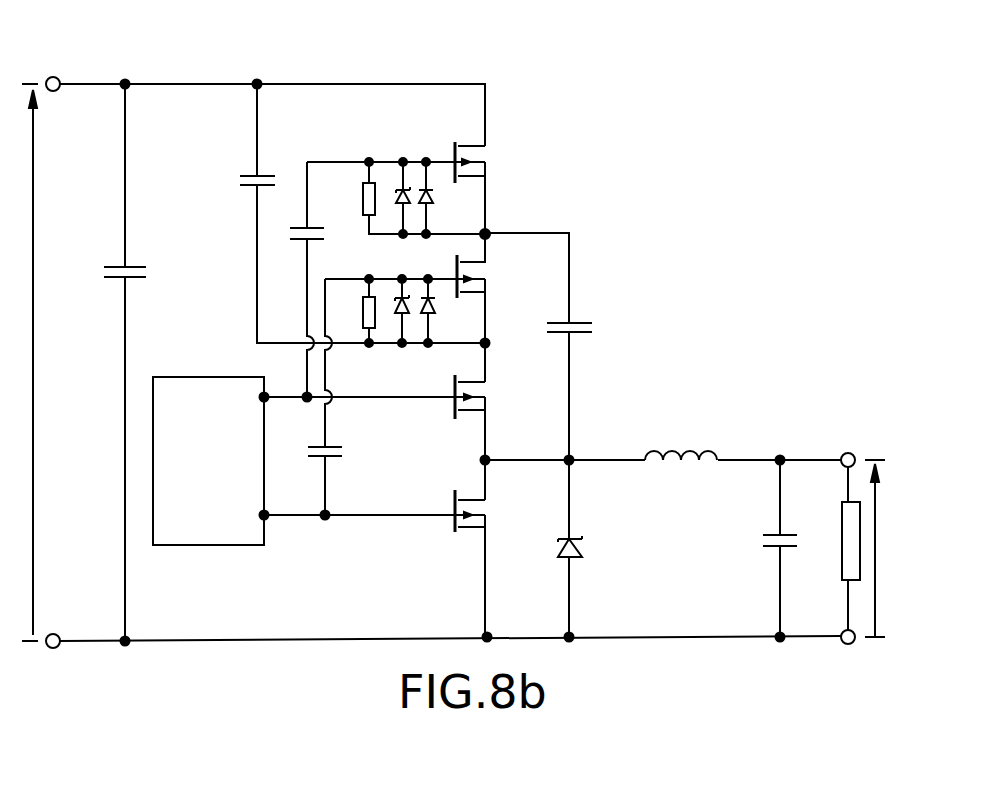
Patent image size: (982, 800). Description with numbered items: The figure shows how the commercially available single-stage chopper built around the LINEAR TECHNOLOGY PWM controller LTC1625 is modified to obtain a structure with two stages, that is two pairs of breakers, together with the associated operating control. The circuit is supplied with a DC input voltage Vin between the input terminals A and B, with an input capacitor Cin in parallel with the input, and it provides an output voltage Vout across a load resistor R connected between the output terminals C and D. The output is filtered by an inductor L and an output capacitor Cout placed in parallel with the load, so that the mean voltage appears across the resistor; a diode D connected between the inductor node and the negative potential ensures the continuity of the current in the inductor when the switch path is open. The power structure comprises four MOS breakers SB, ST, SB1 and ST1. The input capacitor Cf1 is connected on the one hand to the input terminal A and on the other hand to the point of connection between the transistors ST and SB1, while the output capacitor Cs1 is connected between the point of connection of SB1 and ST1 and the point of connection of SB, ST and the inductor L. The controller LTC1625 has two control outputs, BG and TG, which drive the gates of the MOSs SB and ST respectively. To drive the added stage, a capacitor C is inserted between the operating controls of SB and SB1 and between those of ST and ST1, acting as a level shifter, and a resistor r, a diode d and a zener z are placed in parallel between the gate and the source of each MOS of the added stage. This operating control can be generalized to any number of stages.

The input terminal A is at (54, 82).
The input terminal B is at (58, 649).
The capacitor C is at (332, 229).
The diode D is at (559, 556).
The DC input voltage Vin is at (47, 362).
The output voltage Vout is at (891, 548).
The input capacitor Cin is at (120, 279).
The input capacitor Cf1 is at (245, 188).
The output capacitor Cs1 is at (590, 321).
The output capacitor Cout is at (766, 538).
The resistor r is at (360, 197).
The zener z is at (404, 199).
The diode d is at (426, 203).
The transistor ST1 is at (471, 178).
The transistor SB1 is at (473, 293).
The transistor ST is at (472, 409).
The transistor SB is at (472, 529).
The inductor L is at (680, 449).
The load resistor R is at (842, 552).
The PWM controller LTC1625 is at (208, 461).
The control output TG is at (341, 398).
The control output BG is at (339, 517).